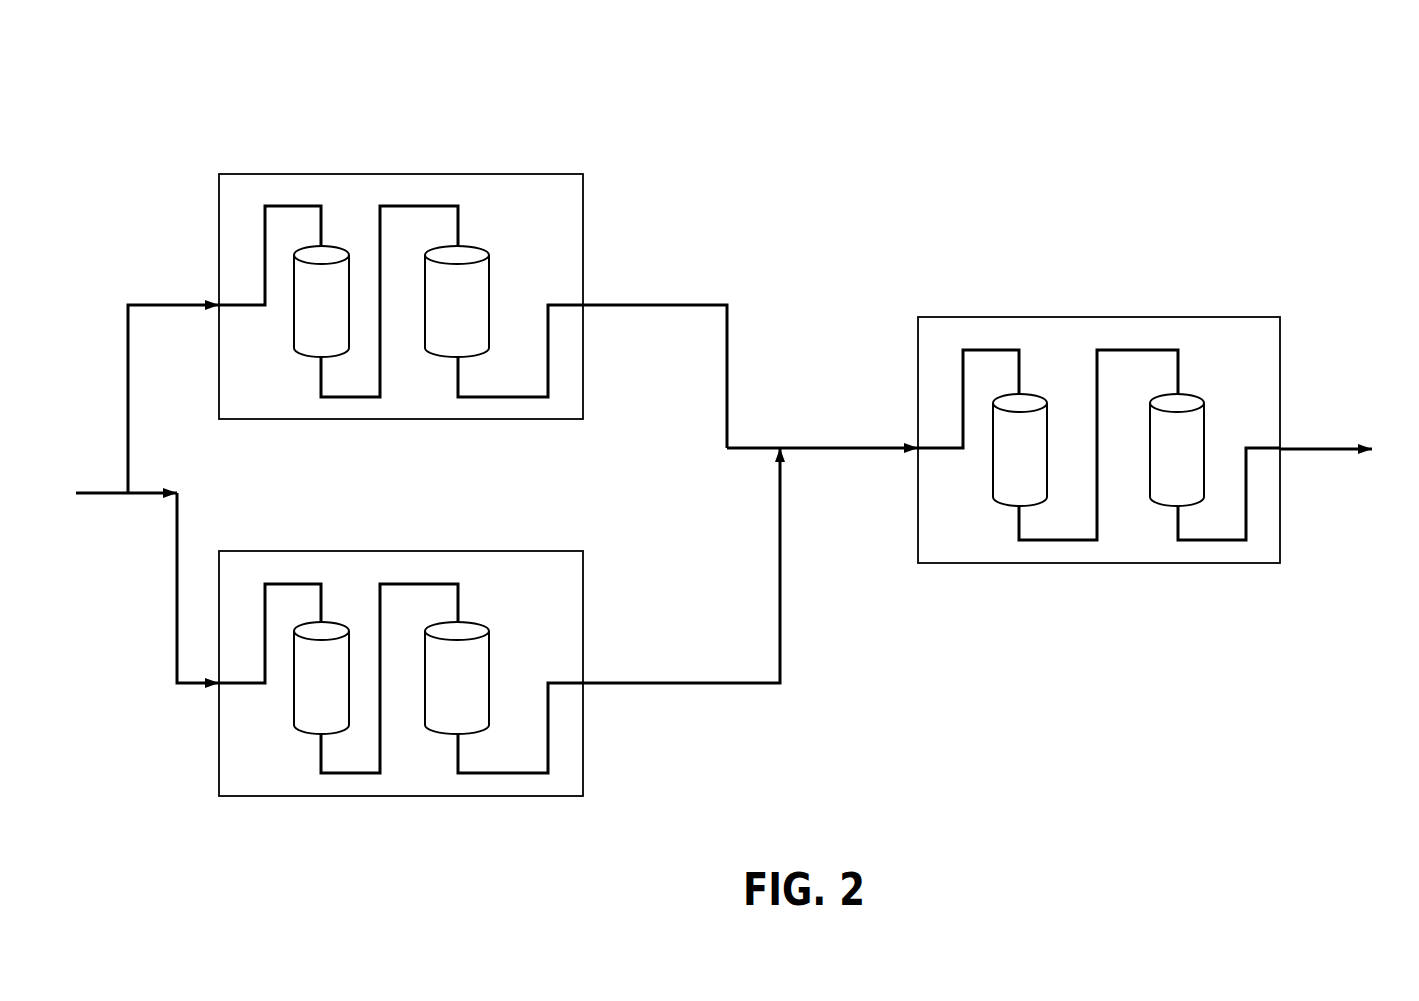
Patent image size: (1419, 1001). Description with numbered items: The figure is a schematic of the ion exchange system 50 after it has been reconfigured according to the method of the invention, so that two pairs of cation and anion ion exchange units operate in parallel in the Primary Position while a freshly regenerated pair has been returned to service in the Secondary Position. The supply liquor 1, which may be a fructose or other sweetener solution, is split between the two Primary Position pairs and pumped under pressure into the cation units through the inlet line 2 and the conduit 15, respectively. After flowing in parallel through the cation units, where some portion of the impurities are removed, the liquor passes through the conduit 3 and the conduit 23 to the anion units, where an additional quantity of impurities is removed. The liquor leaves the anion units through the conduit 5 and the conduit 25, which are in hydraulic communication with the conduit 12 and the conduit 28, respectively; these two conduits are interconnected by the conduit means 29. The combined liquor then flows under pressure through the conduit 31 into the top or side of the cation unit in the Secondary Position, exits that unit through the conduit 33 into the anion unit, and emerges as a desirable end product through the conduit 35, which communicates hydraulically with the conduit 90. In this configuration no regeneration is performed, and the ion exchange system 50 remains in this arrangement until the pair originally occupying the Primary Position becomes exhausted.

The ion exchange system 50 is at (808, 119).
The supply liquor 1 is at (147, 494).
The inlet line 2 is at (270, 242).
The conduit 3 is at (389, 288).
The conduit 5 is at (520, 333).
The conduit 12 is at (655, 360).
The conduit 15 is at (270, 633).
The conduit 23 is at (389, 664).
The conduit 25 is at (520, 710).
The conduit 28 is at (684, 565).
The conduit means 29 is at (822, 434).
The conduit 31 is at (968, 399).
The conduit 33 is at (1098, 445).
The conduit 35 is at (1229, 481).
The conduit 90 is at (1344, 449).